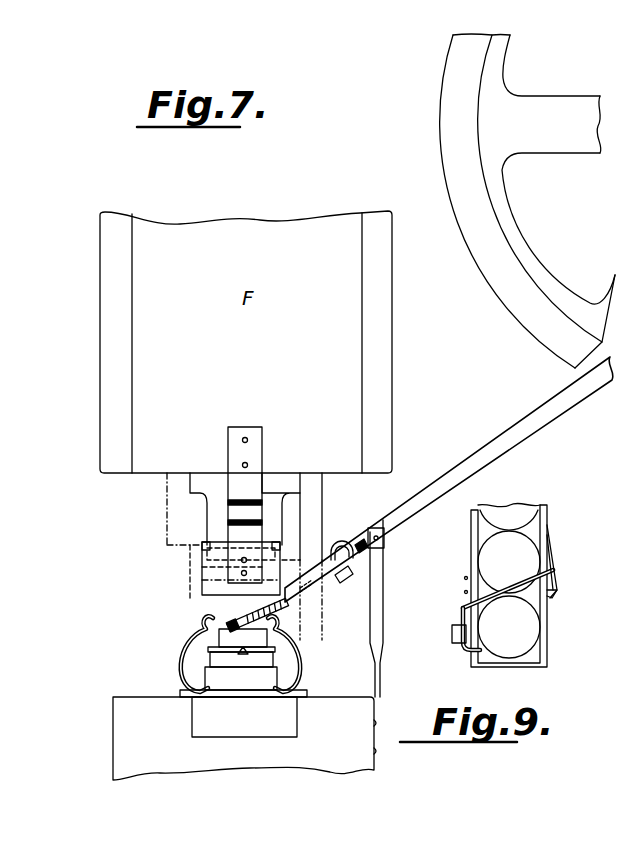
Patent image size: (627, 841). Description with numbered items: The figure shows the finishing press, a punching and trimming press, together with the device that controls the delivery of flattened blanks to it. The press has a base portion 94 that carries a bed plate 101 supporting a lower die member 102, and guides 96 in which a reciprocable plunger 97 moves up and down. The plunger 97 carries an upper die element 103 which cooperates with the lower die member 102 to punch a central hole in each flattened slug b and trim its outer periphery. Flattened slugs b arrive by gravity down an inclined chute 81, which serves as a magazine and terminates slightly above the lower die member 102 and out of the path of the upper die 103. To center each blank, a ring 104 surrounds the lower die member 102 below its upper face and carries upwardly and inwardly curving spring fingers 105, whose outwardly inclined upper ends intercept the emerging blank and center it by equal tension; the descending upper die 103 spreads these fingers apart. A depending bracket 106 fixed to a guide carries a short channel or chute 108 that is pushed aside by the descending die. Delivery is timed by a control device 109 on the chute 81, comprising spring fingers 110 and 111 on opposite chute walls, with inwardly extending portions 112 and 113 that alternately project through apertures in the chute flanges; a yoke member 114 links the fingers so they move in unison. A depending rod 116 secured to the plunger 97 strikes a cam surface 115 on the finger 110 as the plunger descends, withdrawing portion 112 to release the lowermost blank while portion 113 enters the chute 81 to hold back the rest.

In FIG. 7, the chute 81 is at (498, 447).
In FIG. 7, the base portion 94 is at (244, 738).
In FIG. 7, the guides 96 is at (246, 342).
In FIG. 7, the reciprocable plunger 97 is at (206, 490).
In FIG. 7, the bed plate 101 is at (244, 717).
In FIG. 7, the lower die member 102 is at (204, 632).
In FIG. 7, the upper die element 103 is at (272, 525).
In FIG. 7, the ring 104 is at (297, 692).
In FIG. 7, the spring fingers 105 is at (183, 660).
In FIG. 7, the depending bracket 106 is at (252, 479).
In FIG. 7, the channel or chute 108 is at (215, 573).
In FIG. 7, the control device 109 is at (356, 572).
In FIG. 9, the control device 109 is at (509, 627).
In FIG. 7, the spring finger 110 is at (318, 590).
In FIG. 9, the spring finger 110 is at (462, 617).
In FIG. 7, the spring finger 111 is at (368, 550).
In FIG. 9, the spring finger 111 is at (553, 560).
In FIG. 9, the inwardly extending portion 112 is at (468, 652).
In FIG. 9, the inwardly extending portion 113 is at (553, 596).
In FIG. 7, the yoke member 114 is at (386, 534).
In FIG. 9, the yoke member 114 is at (506, 590).
In FIG. 9, the cam surface 115 is at (452, 634).
In FIG. 7, the depending rod 116 is at (320, 552).
In FIG. 7, the flattened slug b is at (247, 622).